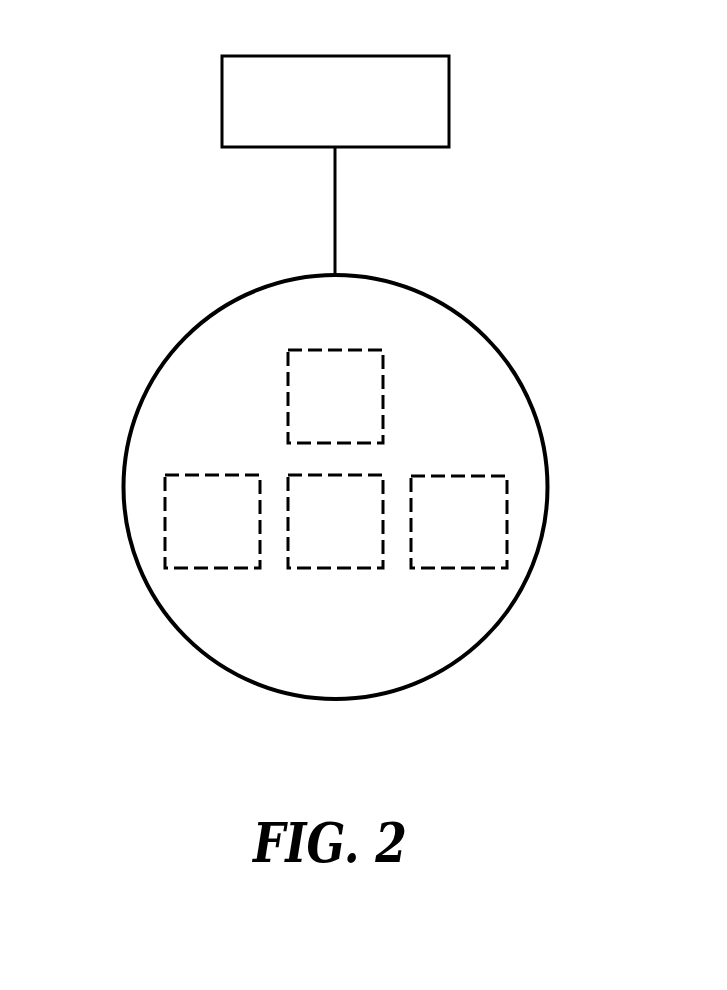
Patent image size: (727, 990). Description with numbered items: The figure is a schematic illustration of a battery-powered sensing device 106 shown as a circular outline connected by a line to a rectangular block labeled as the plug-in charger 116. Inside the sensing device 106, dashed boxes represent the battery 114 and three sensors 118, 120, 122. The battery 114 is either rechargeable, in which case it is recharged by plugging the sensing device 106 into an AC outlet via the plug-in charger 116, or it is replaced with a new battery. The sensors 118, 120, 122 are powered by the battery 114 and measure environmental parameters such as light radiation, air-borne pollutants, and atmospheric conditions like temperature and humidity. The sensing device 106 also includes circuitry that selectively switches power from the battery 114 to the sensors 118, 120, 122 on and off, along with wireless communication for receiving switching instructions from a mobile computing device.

The sensing device 106 is at (537, 408).
The battery 114 is at (348, 350).
The plug-in charger 116 is at (390, 56).
The sensor 118 is at (165, 525).
The sensor 120 is at (345, 568).
The sensor 122 is at (507, 523).